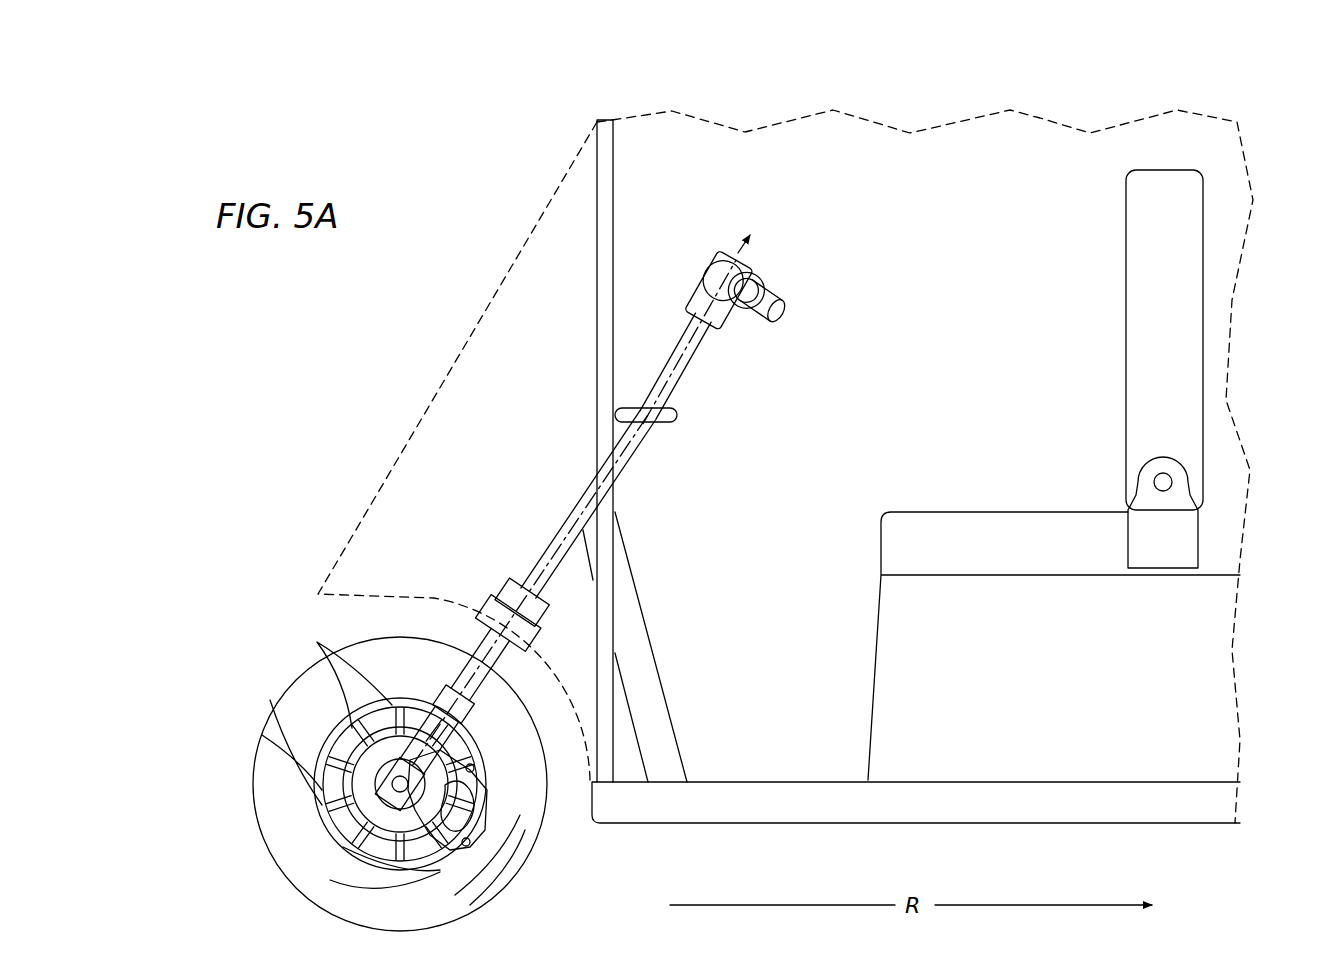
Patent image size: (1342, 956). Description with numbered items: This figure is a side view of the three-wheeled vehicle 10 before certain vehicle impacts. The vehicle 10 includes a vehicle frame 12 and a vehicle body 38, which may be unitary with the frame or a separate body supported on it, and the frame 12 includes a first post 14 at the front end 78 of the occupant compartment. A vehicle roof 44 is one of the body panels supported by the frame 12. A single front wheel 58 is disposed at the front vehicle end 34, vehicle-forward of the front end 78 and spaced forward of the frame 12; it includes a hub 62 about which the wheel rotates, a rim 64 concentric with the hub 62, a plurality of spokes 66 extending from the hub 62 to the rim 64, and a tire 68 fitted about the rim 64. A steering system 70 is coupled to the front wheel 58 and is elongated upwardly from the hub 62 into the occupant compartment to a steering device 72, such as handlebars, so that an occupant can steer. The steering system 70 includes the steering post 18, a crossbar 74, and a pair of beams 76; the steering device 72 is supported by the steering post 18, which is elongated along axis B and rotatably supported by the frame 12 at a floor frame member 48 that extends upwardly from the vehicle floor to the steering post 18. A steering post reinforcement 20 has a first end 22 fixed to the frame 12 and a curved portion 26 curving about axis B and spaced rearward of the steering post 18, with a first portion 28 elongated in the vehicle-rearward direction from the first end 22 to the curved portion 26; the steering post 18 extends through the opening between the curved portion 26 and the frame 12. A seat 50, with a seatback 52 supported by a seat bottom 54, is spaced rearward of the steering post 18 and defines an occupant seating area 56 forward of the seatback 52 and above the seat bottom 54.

The three-wheeled vehicle 10 is at (1140, 75).
The vehicle frame 12 is at (620, 178).
The first post 14 is at (618, 451).
The steering post 18 is at (700, 350).
The steering post reinforcement 20 is at (672, 425).
The first end 22 is at (627, 408).
The curved portion 26 is at (680, 412).
The first portion 28 is at (657, 422).
The front vehicle end 34 is at (245, 603).
The vehicle body 38 is at (428, 393).
The vehicle roof 44 is at (743, 780).
The floor frame member 48 is at (648, 630).
The seat 50 is at (1092, 475).
The seatback 52 is at (1185, 217).
The seat bottom 54 is at (992, 510).
The occupant seating area 56 is at (957, 252).
The front wheel 58 is at (336, 784).
The hub 62 is at (387, 782).
The rim 64 is at (330, 900).
The spokes 66 is at (317, 642).
The tire 68 is at (300, 707).
The steering system 70 is at (605, 510).
The steering device 72 is at (760, 285).
The crossbar 74 is at (479, 618).
The beams 76 is at (445, 700).
The front end 78 is at (652, 210).